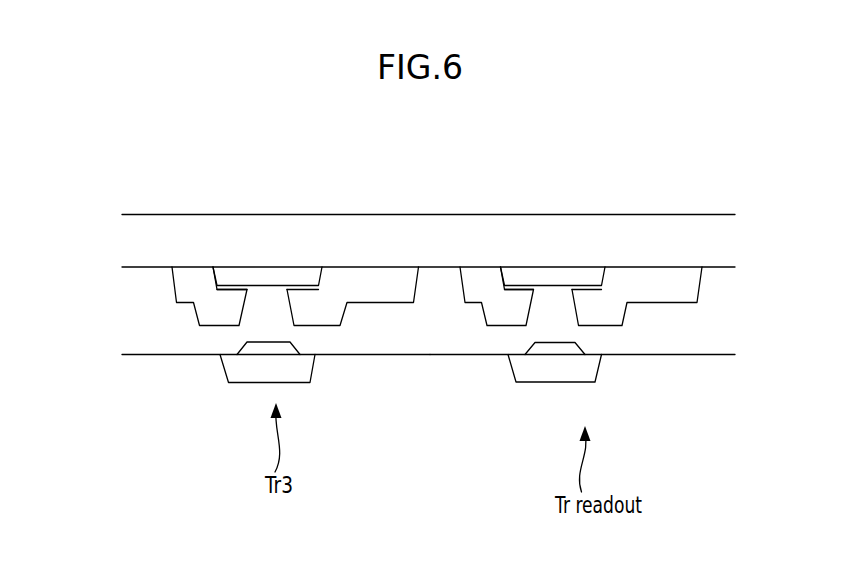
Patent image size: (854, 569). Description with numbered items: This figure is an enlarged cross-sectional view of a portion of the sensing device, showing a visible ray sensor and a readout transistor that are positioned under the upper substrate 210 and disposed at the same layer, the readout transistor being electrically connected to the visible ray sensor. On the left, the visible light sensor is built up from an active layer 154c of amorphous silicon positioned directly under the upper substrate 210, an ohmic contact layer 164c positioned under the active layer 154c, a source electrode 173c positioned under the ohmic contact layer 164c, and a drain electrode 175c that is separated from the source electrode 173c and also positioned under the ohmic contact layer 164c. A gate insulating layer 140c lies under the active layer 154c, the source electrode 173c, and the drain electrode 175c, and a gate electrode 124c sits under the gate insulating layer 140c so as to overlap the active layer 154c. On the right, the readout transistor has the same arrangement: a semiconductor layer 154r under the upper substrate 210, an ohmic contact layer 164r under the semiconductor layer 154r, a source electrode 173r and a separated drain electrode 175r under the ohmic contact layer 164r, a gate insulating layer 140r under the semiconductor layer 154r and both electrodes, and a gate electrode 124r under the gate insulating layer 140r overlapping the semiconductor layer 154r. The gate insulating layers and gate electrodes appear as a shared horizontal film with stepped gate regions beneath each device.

The upper substrate 210 is at (138, 236).
The gate insulating layer 140c is at (142, 336).
The gate insulating layer 140r is at (688, 340).
The gate electrode 124c is at (240, 373).
The gate electrode 124r is at (530, 372).
The source electrode 173c is at (186, 276).
The active layer 154c is at (244, 276).
The ohmic contact layer 164c is at (302, 274).
The drain electrode 175c is at (370, 276).
The source electrode 173r is at (482, 277).
The semiconductor layer 154r is at (555, 274).
The ohmic contact layer 164r is at (594, 277).
The drain electrode 175r is at (670, 276).